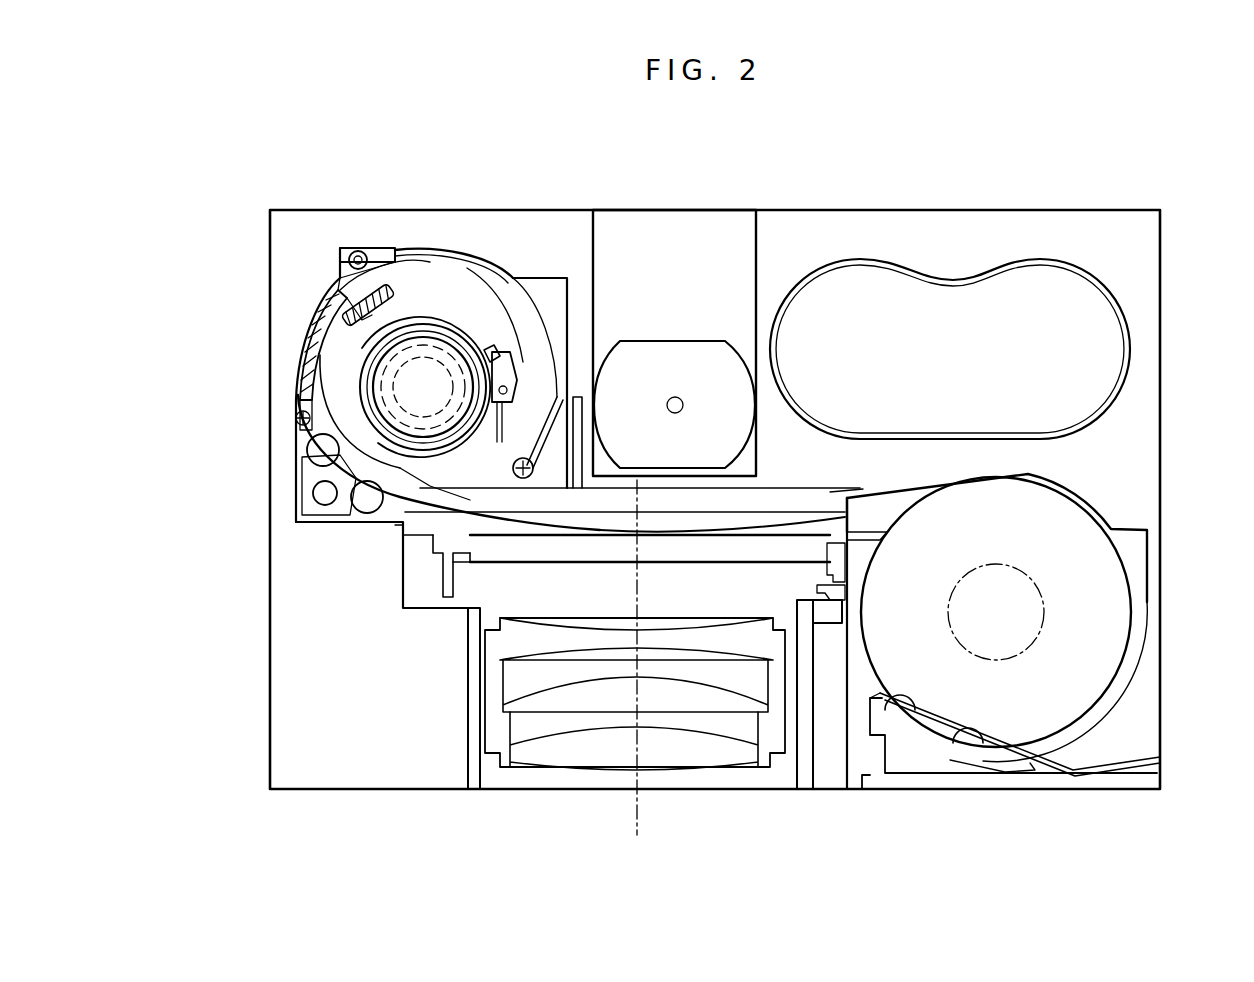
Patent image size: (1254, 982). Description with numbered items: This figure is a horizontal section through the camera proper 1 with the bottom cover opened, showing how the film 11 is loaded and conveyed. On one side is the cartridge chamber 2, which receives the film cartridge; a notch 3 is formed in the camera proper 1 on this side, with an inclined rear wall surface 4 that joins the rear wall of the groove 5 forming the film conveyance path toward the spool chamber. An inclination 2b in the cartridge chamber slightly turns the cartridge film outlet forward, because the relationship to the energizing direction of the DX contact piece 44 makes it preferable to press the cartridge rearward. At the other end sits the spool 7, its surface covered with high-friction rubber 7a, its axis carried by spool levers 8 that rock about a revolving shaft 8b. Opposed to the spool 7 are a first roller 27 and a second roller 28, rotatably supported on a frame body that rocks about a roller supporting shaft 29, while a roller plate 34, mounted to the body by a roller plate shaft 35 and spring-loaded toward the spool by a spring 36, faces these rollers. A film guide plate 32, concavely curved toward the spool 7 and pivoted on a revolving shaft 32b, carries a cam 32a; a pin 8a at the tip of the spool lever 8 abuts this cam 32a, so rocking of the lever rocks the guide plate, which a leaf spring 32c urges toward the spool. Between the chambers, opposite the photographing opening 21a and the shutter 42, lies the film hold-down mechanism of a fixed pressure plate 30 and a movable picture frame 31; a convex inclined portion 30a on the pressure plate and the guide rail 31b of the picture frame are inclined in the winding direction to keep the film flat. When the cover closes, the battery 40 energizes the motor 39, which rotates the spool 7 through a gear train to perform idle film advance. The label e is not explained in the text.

The camera proper 1 is at (350, 790).
The cartridge chamber 2 is at (1140, 543).
The inclination 2b is at (945, 475).
The notch 3 is at (503, 385).
The rear wall surface 4 is at (1130, 598).
The groove 5 is at (765, 518).
The spool 7 is at (405, 300).
The rubber 7a is at (493, 340).
The spool lever 8 is at (453, 478).
The pin 8a is at (352, 298).
The revolving shaft 8b is at (578, 397).
The film 11 is at (300, 426).
The photographing opening 21a is at (680, 790).
The first roller 27 is at (352, 500).
The second roller 28 is at (307, 450).
The roller supporting shaft 29 is at (313, 493).
The fixed pressure plate 30 is at (805, 490).
The convex inclined portion 30a is at (463, 548).
The movable picture frame 31 is at (440, 562).
The film guide rail 31b is at (435, 556).
The film guide plate 32 is at (318, 330).
The cam 32a is at (338, 290).
The revolving shaft 32b is at (298, 412).
The leaf spring 32c is at (350, 350).
The roller plate 34 is at (425, 320).
The roller plate shaft 35 is at (350, 254).
The spring 36 is at (372, 248).
The motor 39 is at (690, 341).
The battery 40 is at (1040, 268).
The shutter 42 is at (730, 762).
The DX contact piece 44 is at (1117, 768).
The cam ring e is at (466, 268).